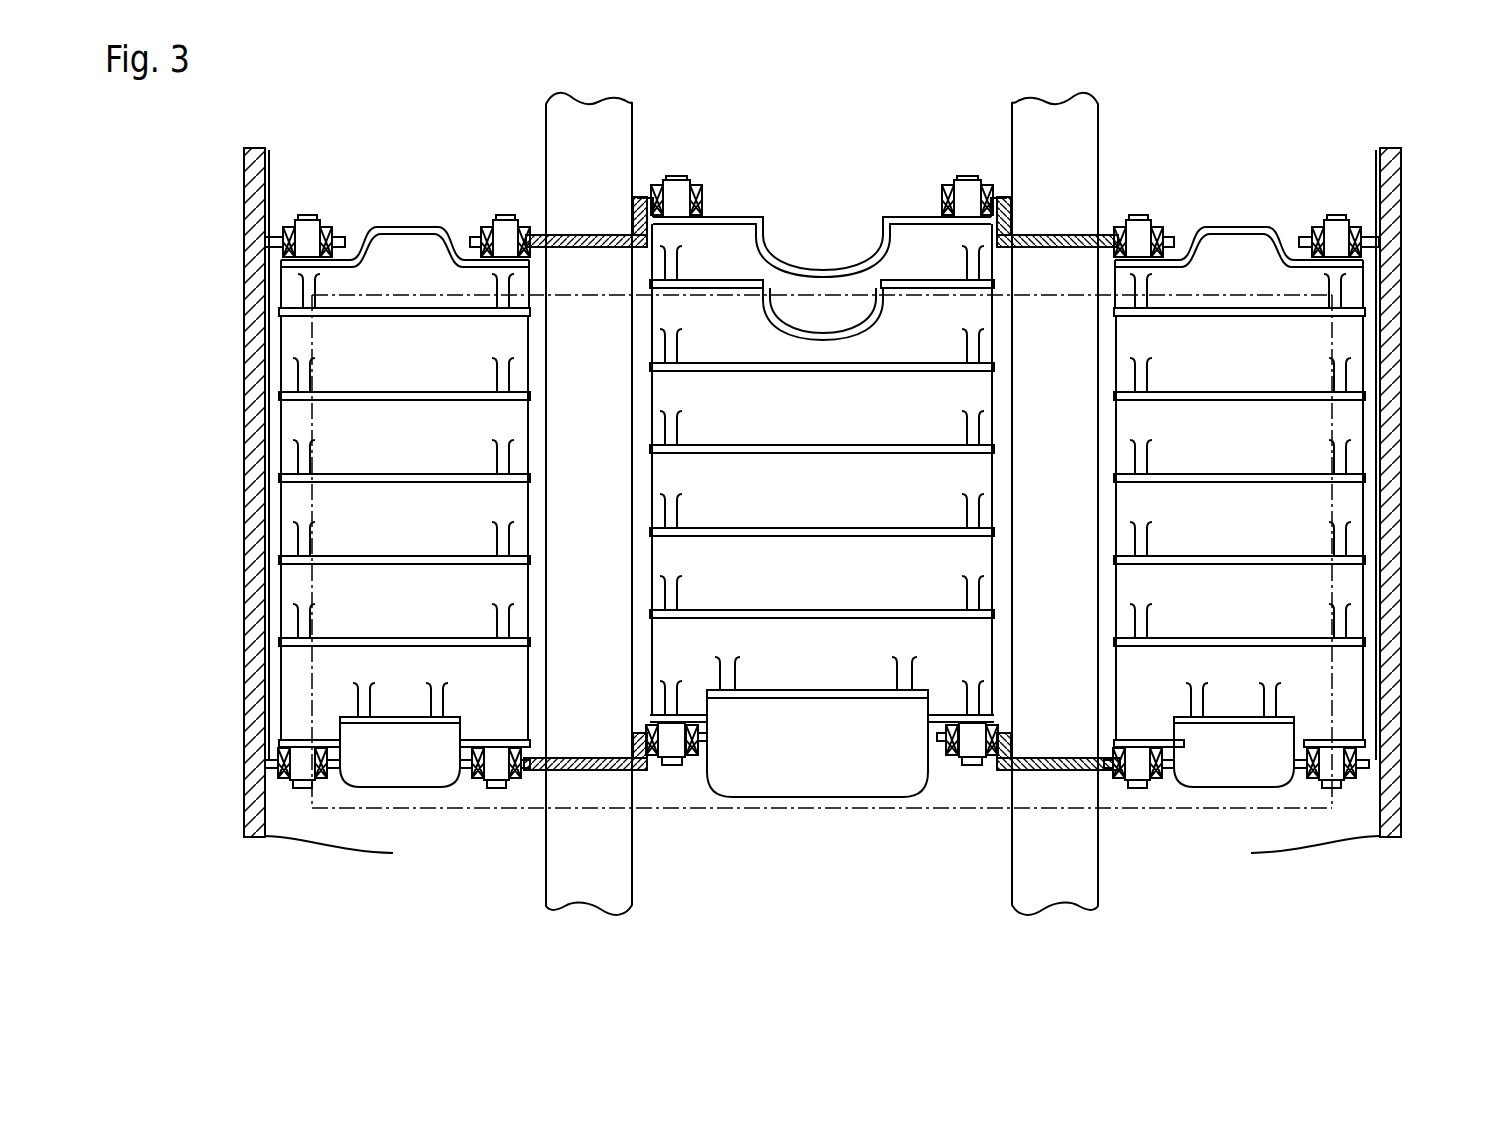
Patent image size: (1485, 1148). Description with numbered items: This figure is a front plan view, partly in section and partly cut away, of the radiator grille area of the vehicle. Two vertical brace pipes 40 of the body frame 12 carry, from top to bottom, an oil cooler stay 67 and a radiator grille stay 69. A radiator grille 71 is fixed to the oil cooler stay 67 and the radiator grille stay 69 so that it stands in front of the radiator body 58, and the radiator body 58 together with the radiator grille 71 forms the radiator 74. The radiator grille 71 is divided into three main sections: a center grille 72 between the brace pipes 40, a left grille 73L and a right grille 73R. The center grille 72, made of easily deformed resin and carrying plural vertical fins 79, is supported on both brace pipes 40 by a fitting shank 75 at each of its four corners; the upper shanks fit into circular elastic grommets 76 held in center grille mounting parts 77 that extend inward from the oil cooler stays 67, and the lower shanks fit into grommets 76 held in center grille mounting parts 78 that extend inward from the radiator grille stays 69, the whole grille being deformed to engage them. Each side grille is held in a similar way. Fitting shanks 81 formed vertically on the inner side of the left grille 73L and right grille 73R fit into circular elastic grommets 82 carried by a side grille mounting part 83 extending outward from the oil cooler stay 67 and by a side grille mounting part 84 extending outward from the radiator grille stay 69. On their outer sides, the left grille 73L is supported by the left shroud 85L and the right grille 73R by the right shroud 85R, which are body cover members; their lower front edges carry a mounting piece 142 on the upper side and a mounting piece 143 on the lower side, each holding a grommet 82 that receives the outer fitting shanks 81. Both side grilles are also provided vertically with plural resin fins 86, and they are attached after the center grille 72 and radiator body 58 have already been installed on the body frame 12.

The body frame 12 is at (535, 896).
The brace pipe 40 is at (614, 891).
The radiator body 58 is at (407, 285).
The oil cooler stay 67 is at (590, 240).
The radiator grille stay 69 is at (580, 758).
The radiator grille 71 is at (408, 212).
The center grille 72 is at (817, 810).
The right grille 73R is at (393, 802).
The left grille 73L is at (1227, 802).
The radiator 74 is at (414, 100).
The fitting shank 75 is at (676, 178).
The circular elastic grommet 76 is at (700, 190).
The center grille mounting part 77 is at (702, 200).
The center grille mounting part 78 is at (703, 737).
The fin 79 is at (973, 393).
The fitting shank 81 is at (304, 215).
The circular elastic grommet 82 is at (326, 228).
The side grille mounting part 83 is at (463, 270).
The side grille mounting part 84 is at (476, 757).
The right shroud 85R is at (244, 520).
The left shroud 85L is at (1403, 463).
The fin 86 is at (288, 345).
The mounting piece 142 is at (340, 250).
The mounting piece 143 is at (330, 740).